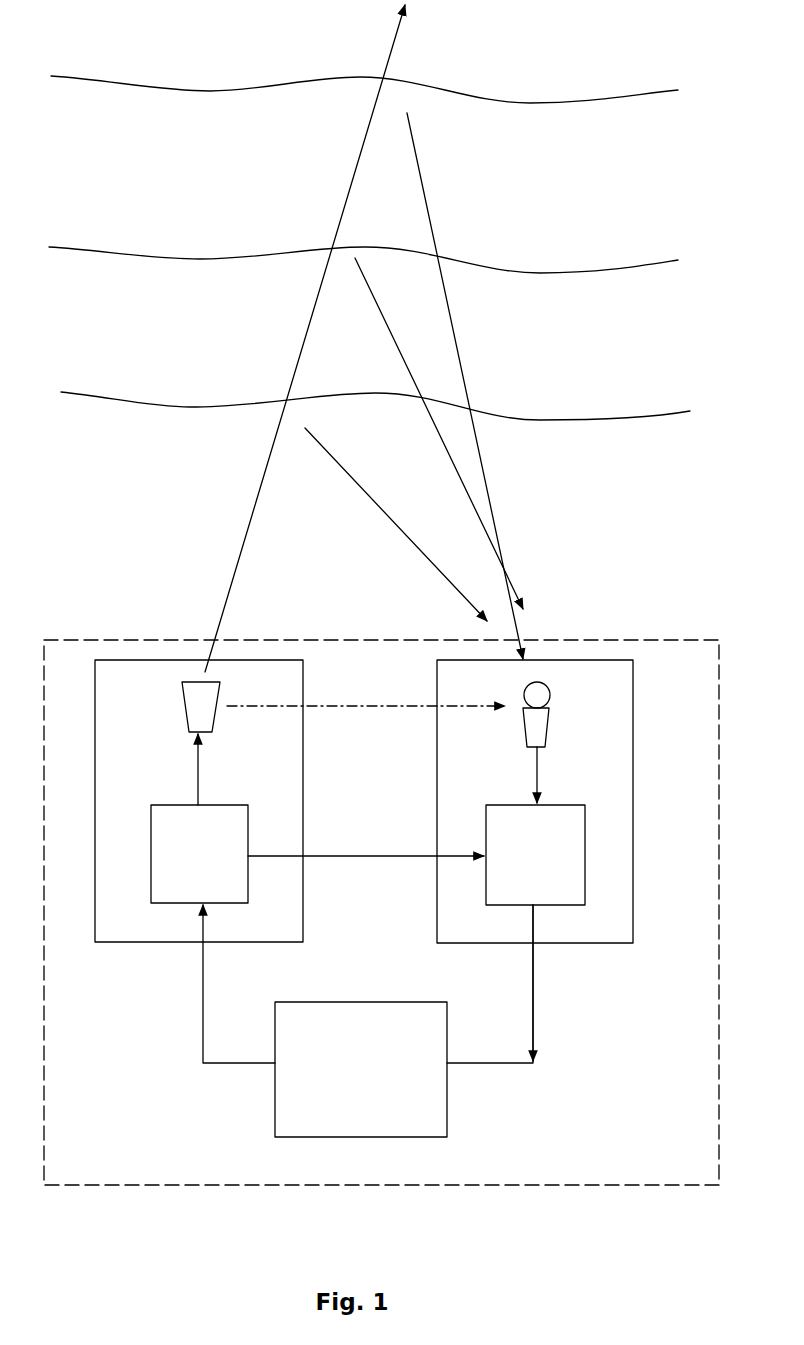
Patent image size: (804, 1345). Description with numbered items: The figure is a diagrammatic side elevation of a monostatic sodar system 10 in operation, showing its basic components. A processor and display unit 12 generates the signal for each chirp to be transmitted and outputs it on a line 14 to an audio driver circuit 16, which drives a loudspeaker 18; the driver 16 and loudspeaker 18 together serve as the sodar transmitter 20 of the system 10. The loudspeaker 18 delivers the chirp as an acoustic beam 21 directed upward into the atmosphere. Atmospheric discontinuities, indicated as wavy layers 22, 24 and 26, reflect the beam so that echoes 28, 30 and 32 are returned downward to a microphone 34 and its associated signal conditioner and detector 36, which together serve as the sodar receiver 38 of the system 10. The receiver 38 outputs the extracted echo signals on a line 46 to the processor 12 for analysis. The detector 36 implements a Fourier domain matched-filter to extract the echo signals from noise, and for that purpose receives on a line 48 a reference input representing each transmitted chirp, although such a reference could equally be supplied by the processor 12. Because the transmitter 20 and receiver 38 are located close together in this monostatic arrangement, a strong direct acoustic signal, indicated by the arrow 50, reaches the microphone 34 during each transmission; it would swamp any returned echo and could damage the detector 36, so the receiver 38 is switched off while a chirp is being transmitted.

The monostatic sodar system 10 is at (746, 831).
The processor and display unit 12 is at (361, 1069).
The line 14 is at (203, 1033).
The audio driver circuit 16 is at (199, 818).
The loudspeaker 18 is at (180, 717).
The sodar transmitter 20 is at (199, 801).
The acoustic beam 21 is at (240, 527).
The discontinuity 22 is at (183, 406).
The discontinuity 24 is at (208, 258).
The discontinuity 26 is at (243, 88).
The echo 28 is at (378, 515).
The echo 30 is at (440, 454).
The echo 32 is at (430, 222).
The microphone 34 is at (548, 732).
The signal conditioner and detector 36 is at (535, 826).
The sodar receiver 38 is at (535, 801).
The line 46 is at (545, 1040).
The line 48 is at (352, 855).
The direct acoustic signal 50 is at (403, 708).